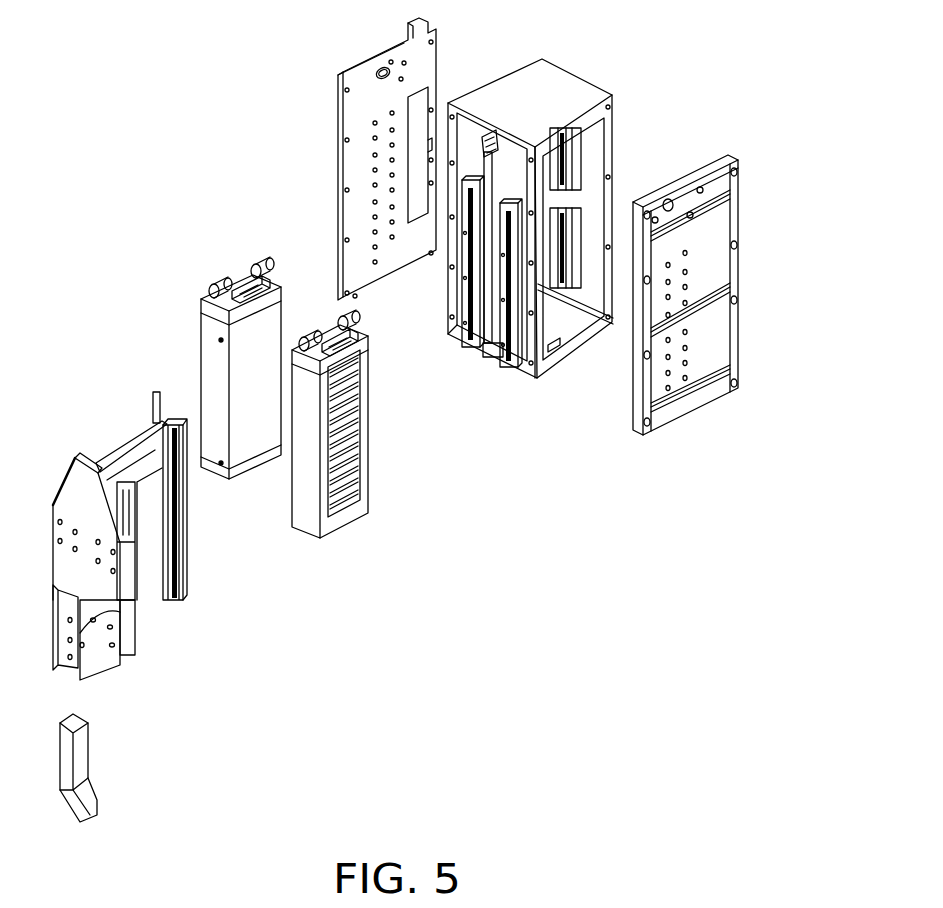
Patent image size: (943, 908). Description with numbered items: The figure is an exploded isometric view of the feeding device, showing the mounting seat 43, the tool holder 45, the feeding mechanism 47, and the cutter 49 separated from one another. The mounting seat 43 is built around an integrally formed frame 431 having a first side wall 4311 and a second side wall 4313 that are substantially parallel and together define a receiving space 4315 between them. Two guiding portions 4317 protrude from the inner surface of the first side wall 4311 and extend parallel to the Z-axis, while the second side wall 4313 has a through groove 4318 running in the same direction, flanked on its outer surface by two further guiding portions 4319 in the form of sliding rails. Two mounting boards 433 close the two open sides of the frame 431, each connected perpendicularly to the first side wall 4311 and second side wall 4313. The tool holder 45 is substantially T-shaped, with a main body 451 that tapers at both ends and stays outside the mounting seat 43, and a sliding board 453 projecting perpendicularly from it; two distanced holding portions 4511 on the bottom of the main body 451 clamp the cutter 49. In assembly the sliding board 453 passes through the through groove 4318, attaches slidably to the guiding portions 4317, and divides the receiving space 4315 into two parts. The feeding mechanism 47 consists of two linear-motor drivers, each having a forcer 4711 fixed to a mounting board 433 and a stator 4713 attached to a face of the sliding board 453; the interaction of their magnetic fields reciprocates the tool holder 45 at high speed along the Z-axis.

The mounting seat 43 is at (718, 40).
The frame 431 is at (553, 82).
The first side wall 4311 is at (595, 292).
The second side wall 4313 is at (528, 347).
The receiving space 4315 is at (557, 327).
The guiding portions 4317 is at (580, 233).
The through groove 4318 is at (497, 173).
The guiding portions 4319 is at (450, 336).
The mounting boards 433 is at (710, 168).
The tool holder 45 is at (132, 397).
The main body 451 is at (75, 528).
The sliding board 453 is at (178, 592).
The holding portions 4511 is at (97, 648).
The feeding mechanism 47 is at (433, 568).
The forcer 4711 is at (327, 537).
The stator 4713 is at (150, 547).
The cutter 49 is at (85, 757).